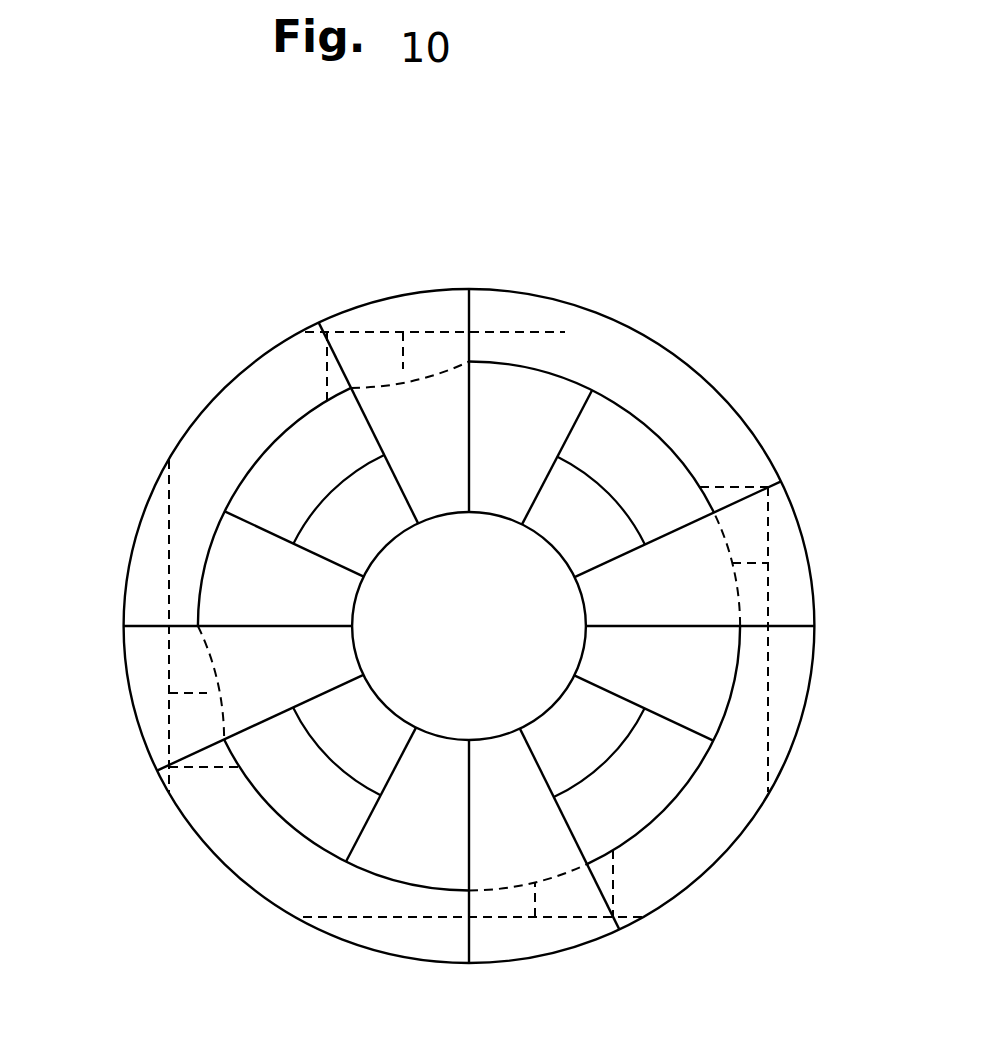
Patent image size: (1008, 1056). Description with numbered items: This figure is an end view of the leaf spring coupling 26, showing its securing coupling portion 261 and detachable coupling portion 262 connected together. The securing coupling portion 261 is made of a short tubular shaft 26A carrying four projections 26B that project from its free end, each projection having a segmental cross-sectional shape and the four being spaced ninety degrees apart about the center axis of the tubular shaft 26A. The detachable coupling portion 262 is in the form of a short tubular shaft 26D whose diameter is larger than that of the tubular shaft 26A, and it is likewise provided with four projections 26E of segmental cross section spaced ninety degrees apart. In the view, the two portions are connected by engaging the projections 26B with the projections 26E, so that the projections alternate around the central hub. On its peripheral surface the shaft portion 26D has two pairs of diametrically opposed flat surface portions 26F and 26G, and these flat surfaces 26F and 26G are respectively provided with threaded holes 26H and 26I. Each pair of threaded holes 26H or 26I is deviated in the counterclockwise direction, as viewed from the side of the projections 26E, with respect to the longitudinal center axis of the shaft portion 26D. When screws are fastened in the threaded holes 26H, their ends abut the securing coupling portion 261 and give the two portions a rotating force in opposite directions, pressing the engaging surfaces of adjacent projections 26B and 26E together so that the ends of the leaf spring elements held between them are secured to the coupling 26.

The leaf spring coupling 26 is at (190, 350).
The securing coupling portion 261 is at (698, 785).
The detachable coupling portion 262 is at (726, 392).
The tubular shaft 26A is at (623, 462).
The projections 26B is at (257, 560).
The tubular shaft 26D is at (657, 870).
The projections 26E is at (437, 500).
The flat surface portions 26F is at (170, 533).
The flat surface portions 26G is at (565, 332).
The threaded holes 26H is at (190, 729).
The threaded holes 26I is at (366, 356).